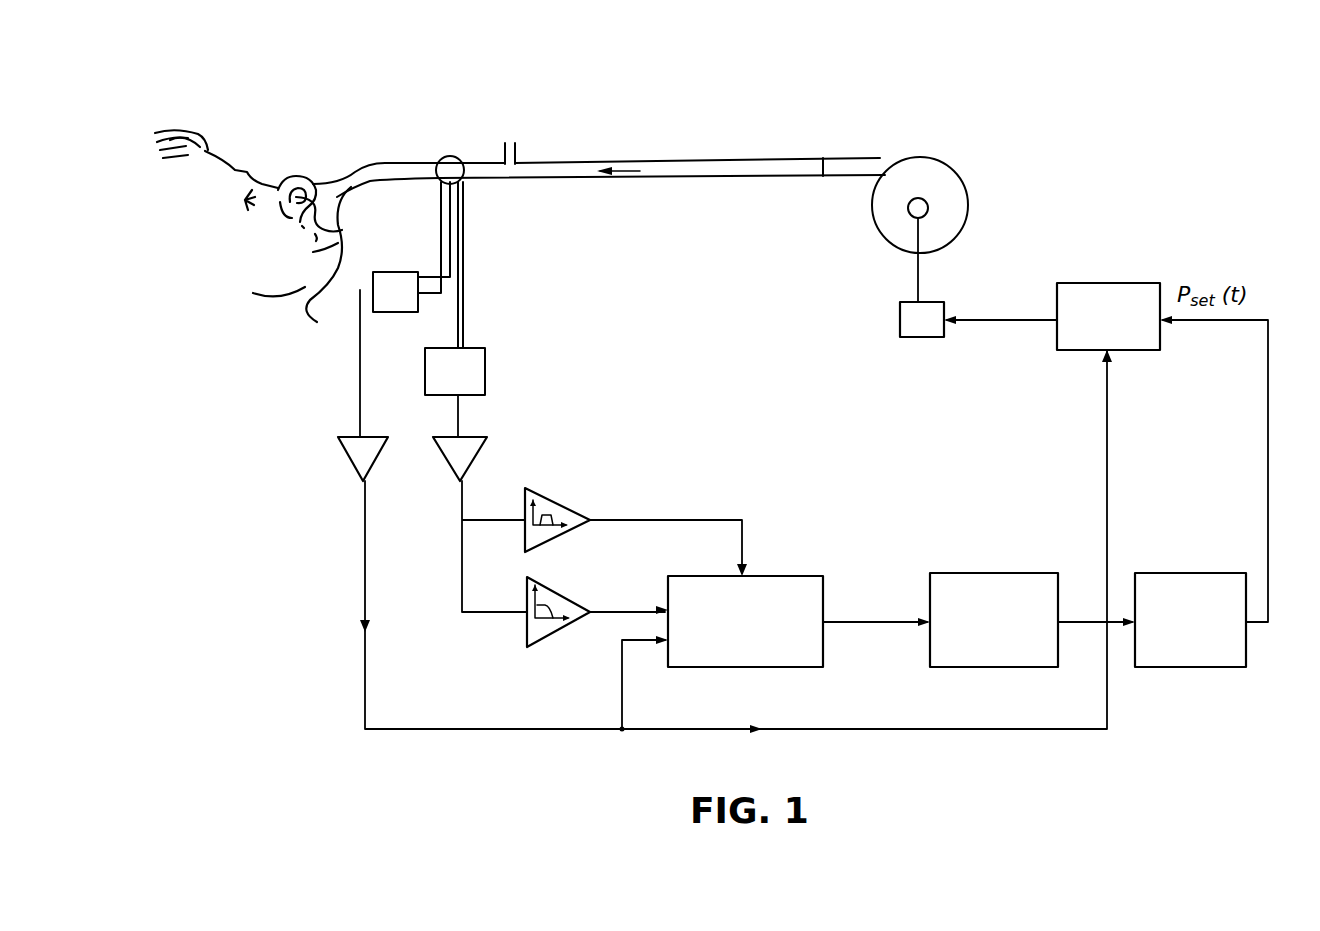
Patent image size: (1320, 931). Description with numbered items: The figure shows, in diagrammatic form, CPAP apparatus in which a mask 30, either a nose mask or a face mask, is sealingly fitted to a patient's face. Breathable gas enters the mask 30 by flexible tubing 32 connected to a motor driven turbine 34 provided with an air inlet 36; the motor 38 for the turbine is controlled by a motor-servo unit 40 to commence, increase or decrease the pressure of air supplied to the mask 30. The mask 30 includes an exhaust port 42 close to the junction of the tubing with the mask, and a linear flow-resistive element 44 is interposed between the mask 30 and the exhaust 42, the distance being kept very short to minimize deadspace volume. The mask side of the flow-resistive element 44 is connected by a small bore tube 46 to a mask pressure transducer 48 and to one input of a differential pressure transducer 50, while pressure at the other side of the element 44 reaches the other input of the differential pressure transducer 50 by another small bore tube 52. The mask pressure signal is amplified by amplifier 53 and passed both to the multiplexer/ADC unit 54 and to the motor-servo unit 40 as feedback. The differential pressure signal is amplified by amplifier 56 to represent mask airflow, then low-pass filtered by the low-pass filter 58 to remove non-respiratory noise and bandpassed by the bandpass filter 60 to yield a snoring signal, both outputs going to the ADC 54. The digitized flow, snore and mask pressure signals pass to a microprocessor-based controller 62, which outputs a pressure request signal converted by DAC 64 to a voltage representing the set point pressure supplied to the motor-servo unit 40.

The mask 30 is at (313, 183).
The flexible tubing 32 is at (730, 164).
The motor driven turbine 34 is at (935, 158).
The air inlet 36 is at (928, 207).
The motor 38 is at (935, 302).
The motor-servo unit 40 is at (1127, 292).
The exhaust port 42 is at (517, 152).
The linear flow-resistive element 44 is at (455, 157).
The small bore tube 46 is at (452, 248).
The mask pressure transducer 48 is at (390, 312).
The differential pressure transducer 50 is at (485, 362).
The small bore tube 52 is at (464, 285).
The amplifier 53 is at (340, 456).
The multiplexer/ADC unit 54 is at (775, 583).
The amplifier 56 is at (470, 448).
The low-pass filter 58 is at (555, 602).
The bandpass filter 60 is at (565, 512).
The controller 62 is at (950, 586).
The DAC 64 is at (1155, 583).